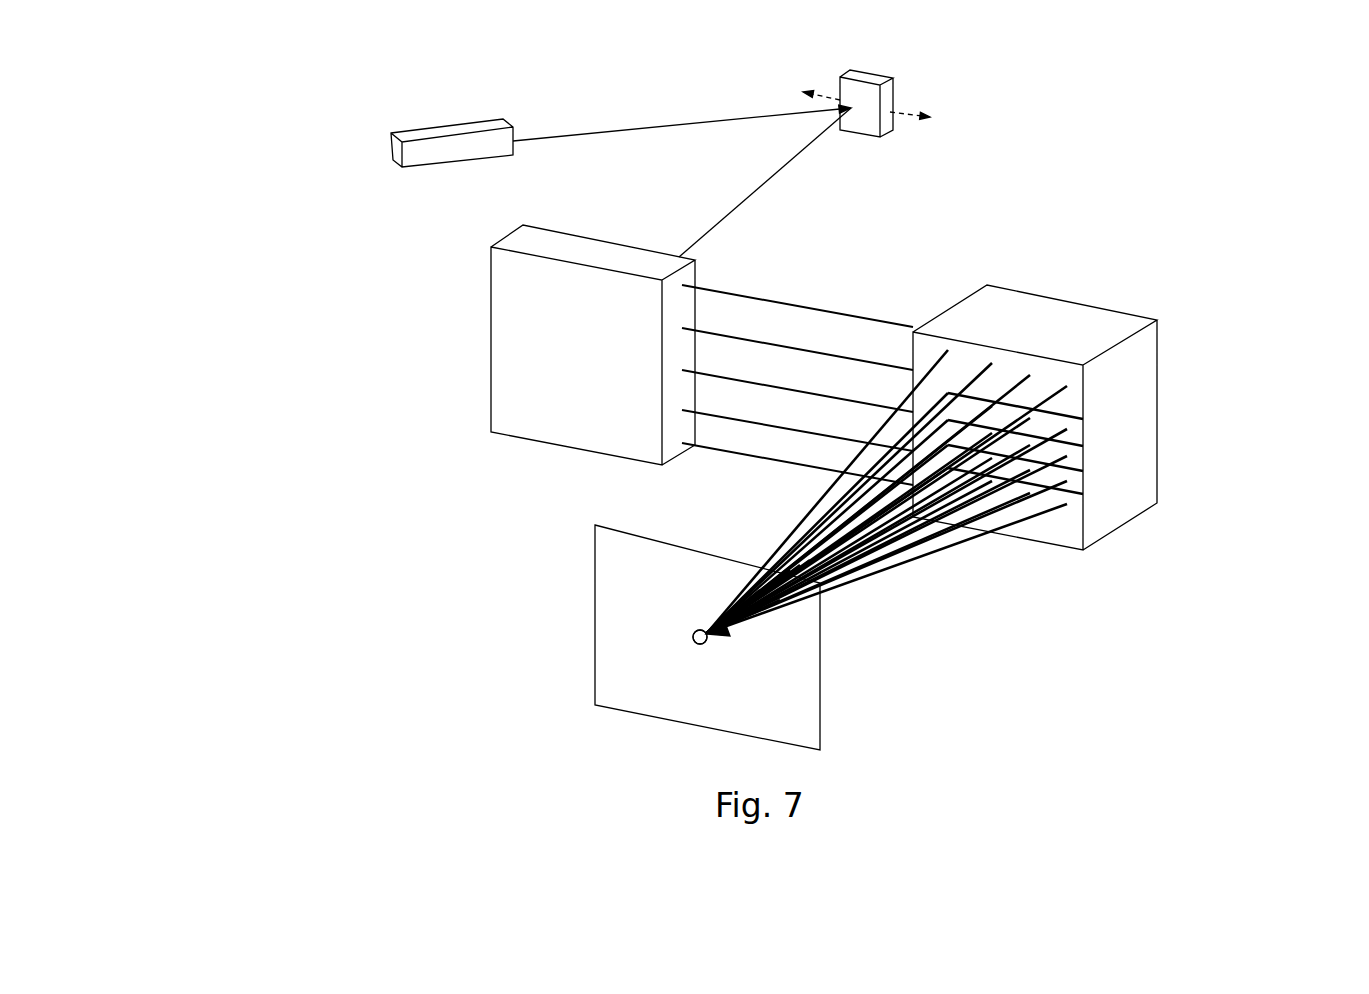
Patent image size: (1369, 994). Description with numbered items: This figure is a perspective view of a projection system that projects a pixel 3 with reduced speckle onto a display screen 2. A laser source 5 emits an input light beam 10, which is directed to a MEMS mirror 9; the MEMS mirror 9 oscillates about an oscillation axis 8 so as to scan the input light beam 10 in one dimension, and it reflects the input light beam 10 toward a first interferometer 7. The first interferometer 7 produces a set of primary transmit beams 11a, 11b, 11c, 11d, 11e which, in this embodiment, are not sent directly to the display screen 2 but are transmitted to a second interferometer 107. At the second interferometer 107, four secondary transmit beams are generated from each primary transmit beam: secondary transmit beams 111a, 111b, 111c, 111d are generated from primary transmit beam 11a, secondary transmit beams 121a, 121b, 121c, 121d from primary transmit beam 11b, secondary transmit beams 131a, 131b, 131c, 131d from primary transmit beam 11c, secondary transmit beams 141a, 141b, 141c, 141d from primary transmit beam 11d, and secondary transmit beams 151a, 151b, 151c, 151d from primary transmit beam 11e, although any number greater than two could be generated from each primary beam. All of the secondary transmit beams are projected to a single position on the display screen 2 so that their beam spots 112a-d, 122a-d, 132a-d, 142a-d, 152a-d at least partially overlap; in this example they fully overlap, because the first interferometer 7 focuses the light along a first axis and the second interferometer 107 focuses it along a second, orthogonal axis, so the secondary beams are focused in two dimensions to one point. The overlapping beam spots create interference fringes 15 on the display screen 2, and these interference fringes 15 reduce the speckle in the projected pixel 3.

The display screen 2 is at (595, 557).
The pixel 3 is at (693, 643).
The laser source 5 is at (462, 128).
The first interferometer 7 is at (491, 387).
The oscillation axis 8 is at (913, 118).
The MEMS mirror 9 is at (878, 75).
The input light beam 10 is at (625, 128).
The interference fringes 15 is at (698, 628).
The second interferometer 107 is at (1140, 375).
The primary transmit beam 11a is at (730, 290).
The primary transmit beam 11b is at (747, 337).
The primary transmit beam 11c is at (770, 383).
The primary transmit beam 11d is at (790, 428).
The primary transmit beam 11e is at (807, 463).
The secondary transmit beam 111a is at (948, 350).
The secondary transmit beam 111b is at (992, 363).
The secondary transmit beam 111c is at (1030, 375).
The secondary transmit beam 111d is at (1067, 386).
The secondary transmit beam 121a is at (1083, 438).
The secondary transmit beam 121b is at (1083, 430).
The secondary transmit beam 121c is at (1083, 425).
The secondary transmit beam 121d is at (1083, 418).
The secondary transmit beam 131a is at (1083, 480).
The secondary transmit beam 131b is at (1083, 470).
The secondary transmit beam 131c is at (1083, 460).
The secondary transmit beam 131d is at (1083, 448).
The secondary transmit beam 141a is at (960, 452).
The secondary transmit beam 141b is at (992, 458).
The secondary transmit beam 141c is at (1030, 470).
The secondary transmit beam 141d is at (1067, 481).
The secondary transmit beam 151a is at (883, 577).
The secondary transmit beam 151b is at (905, 563).
The secondary transmit beam 151c is at (925, 557).
The secondary transmit beam 151d is at (958, 548).
The beam spots 112a-d is at (700, 648).
The beam spots 122a-d is at (748, 601).
The beam spots 132a-d is at (753, 599).
The beam spots 142a-d is at (758, 596).
The beam spots 152a-d is at (763, 594).